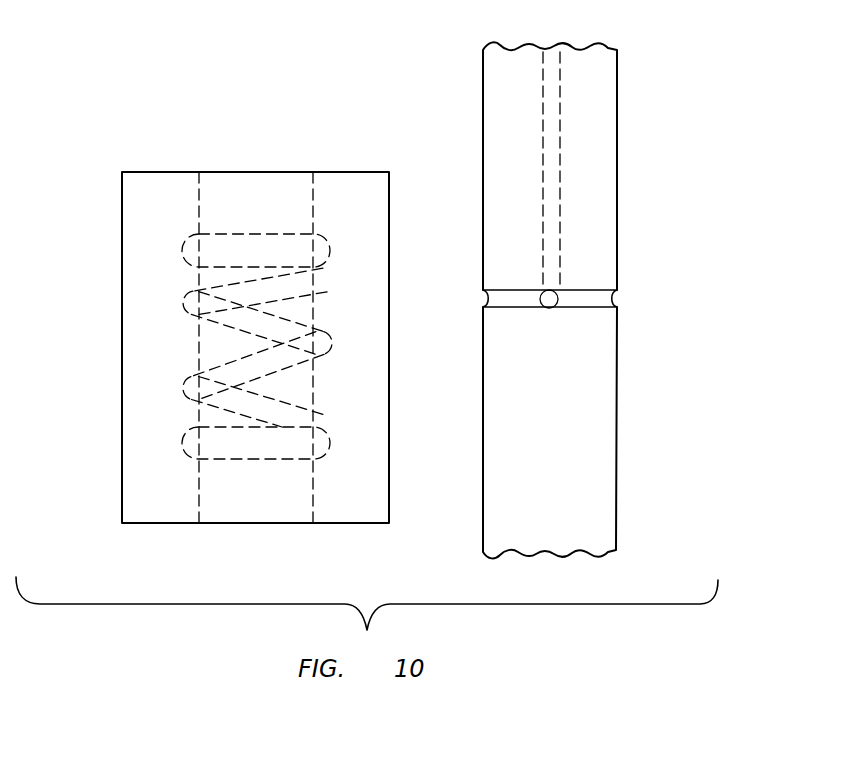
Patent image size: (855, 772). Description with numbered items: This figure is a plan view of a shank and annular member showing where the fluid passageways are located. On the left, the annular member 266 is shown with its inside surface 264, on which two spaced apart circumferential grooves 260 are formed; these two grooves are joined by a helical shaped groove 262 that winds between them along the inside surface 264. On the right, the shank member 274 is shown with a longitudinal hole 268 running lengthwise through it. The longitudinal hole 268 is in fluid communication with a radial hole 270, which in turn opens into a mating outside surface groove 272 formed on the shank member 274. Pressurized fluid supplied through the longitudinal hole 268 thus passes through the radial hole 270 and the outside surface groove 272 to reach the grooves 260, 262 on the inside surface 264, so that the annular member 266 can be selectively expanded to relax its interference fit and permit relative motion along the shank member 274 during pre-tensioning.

The circumferential grooves 260 is at (257, 252).
The helical shaped groove 262 is at (240, 362).
The inside surface 264 is at (201, 210).
The annular member 266 is at (345, 172).
The longitudinal hole 268 is at (549, 60).
The radial hole 270 is at (547, 303).
The outside surface groove 272 is at (612, 297).
The shank member 274 is at (615, 412).